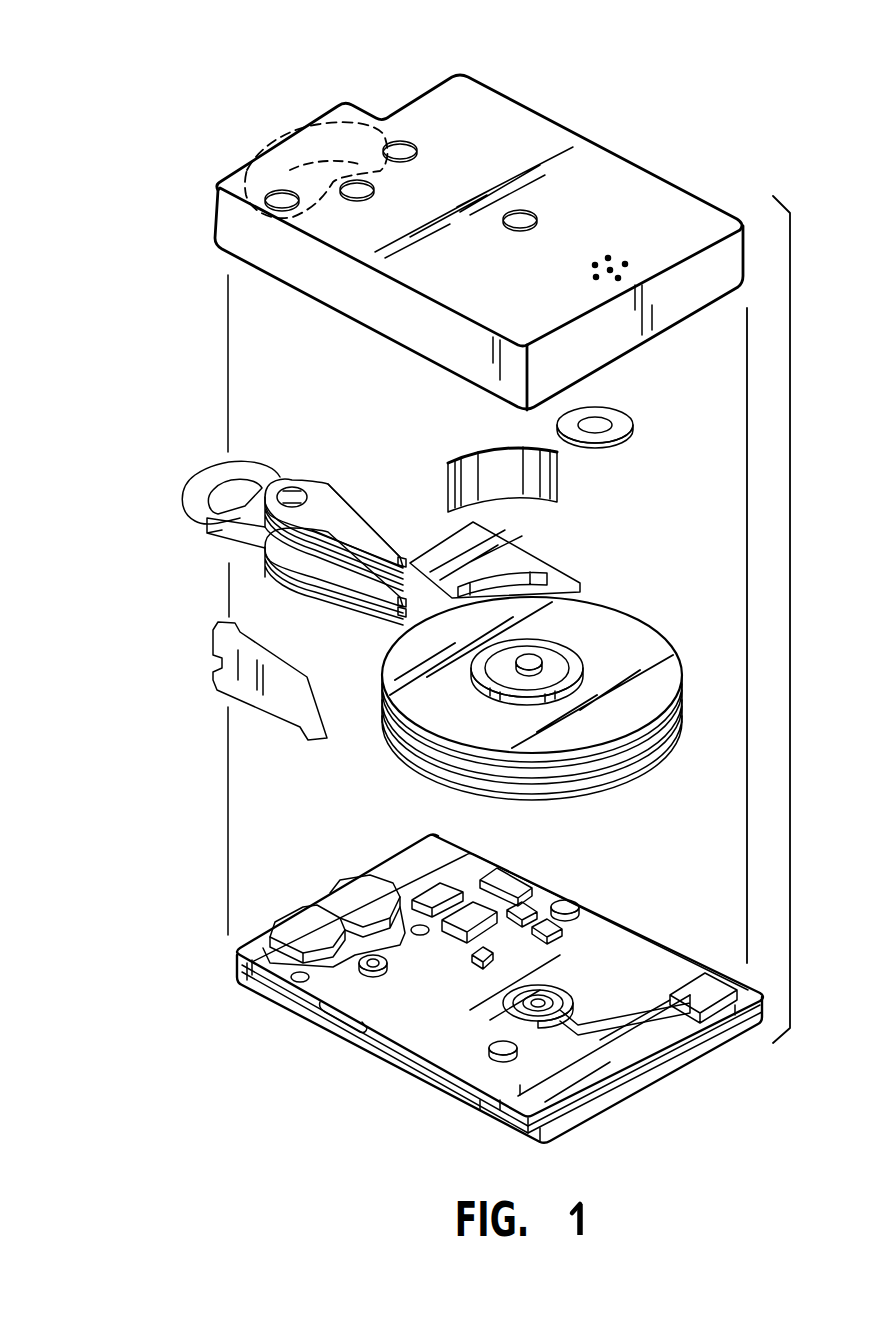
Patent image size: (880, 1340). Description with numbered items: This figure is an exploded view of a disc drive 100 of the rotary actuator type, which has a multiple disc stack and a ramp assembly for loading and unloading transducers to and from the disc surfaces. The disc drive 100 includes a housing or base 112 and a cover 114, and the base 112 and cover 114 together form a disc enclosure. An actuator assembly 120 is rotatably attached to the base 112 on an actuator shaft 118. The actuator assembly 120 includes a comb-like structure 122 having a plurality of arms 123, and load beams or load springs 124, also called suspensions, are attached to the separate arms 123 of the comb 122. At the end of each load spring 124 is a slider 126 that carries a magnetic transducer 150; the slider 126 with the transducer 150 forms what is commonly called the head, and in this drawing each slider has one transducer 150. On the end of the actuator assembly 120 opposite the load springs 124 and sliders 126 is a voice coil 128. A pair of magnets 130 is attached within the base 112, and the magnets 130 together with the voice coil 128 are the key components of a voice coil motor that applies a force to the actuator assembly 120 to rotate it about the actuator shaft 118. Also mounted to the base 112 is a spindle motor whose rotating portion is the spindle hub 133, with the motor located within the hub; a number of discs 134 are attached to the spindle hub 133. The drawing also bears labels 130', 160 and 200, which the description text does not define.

The disc drive 100 is at (608, 97).
The base 112 is at (655, 962).
The cover 114 is at (632, 185).
The actuator shaft 118 is at (292, 487).
The actuator assembly 120 is at (247, 538).
The comb-like structure 122 is at (318, 595).
The arms 123 is at (350, 507).
The load springs 124 is at (362, 533).
The slider 126 is at (403, 555).
The voice coil 128 is at (207, 493).
The pair of magnets 130 is at (308, 152).
The actuator position on base 130' is at (334, 919).
The spindle hub 133 is at (535, 655).
The discs 134 is at (642, 637).
The magnetic transducer 150 is at (433, 555).
The seal 160 is at (257, 992).
The disc stack 200 is at (660, 738).